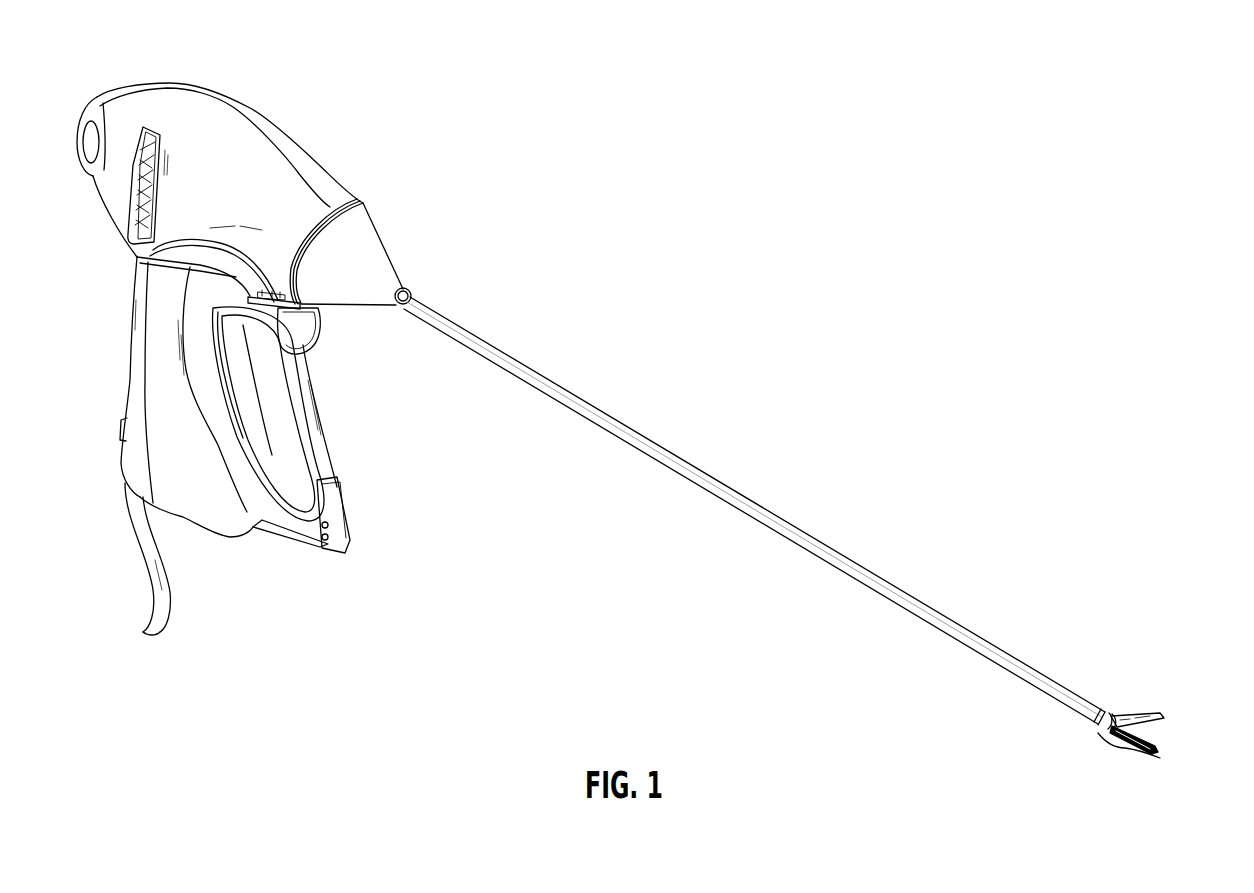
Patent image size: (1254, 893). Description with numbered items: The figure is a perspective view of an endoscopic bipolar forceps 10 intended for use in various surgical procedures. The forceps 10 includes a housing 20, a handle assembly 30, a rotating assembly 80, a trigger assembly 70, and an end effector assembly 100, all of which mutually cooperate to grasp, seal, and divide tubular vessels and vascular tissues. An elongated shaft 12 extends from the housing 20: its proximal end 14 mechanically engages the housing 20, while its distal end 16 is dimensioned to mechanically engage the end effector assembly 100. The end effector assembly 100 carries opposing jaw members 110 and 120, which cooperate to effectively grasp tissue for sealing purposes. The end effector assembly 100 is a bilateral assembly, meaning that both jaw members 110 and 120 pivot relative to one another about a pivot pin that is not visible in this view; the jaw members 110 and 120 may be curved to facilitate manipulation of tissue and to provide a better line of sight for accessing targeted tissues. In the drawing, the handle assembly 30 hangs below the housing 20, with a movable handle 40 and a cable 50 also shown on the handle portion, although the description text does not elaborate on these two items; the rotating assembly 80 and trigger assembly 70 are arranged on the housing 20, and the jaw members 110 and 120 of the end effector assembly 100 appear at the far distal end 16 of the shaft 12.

The forceps 10 is at (653, 418).
The shaft 12 is at (750, 500).
The proximal end 14 is at (412, 296).
The distal end 16 is at (1102, 710).
The housing 20 is at (240, 176).
The handle assembly 30 is at (273, 405).
The movable handle (trigger) 40 is at (311, 398).
The electrosurgical cable 50 is at (241, 553).
The trigger assembly 70 is at (341, 334).
The rotating assembly 80 is at (141, 113).
The end effector assembly 100 is at (1164, 740).
The jaw member 110 is at (1160, 718).
The jaw member 120 is at (1158, 756).